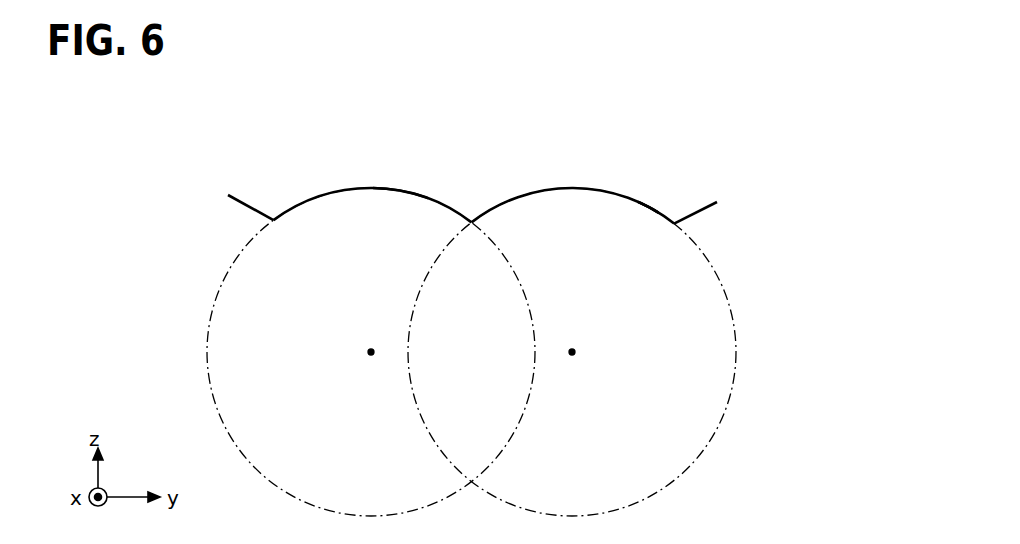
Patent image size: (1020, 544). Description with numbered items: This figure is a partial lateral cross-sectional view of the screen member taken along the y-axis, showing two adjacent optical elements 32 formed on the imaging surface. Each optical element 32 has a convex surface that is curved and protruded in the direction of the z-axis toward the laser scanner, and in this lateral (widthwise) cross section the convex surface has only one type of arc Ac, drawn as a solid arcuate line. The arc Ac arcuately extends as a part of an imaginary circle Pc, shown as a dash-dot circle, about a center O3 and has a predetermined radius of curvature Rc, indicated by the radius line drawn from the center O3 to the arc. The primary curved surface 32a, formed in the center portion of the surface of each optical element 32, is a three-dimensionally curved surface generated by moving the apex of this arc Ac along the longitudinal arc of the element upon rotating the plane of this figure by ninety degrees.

The optical element 32 is at (315, 198).
The primary curved surface 32a is at (374, 182).
The arc Ac is at (399, 190).
The radius of curvature Rc is at (432, 209).
The center O3 is at (371, 352).
The imaginary circle Pc is at (233, 440).